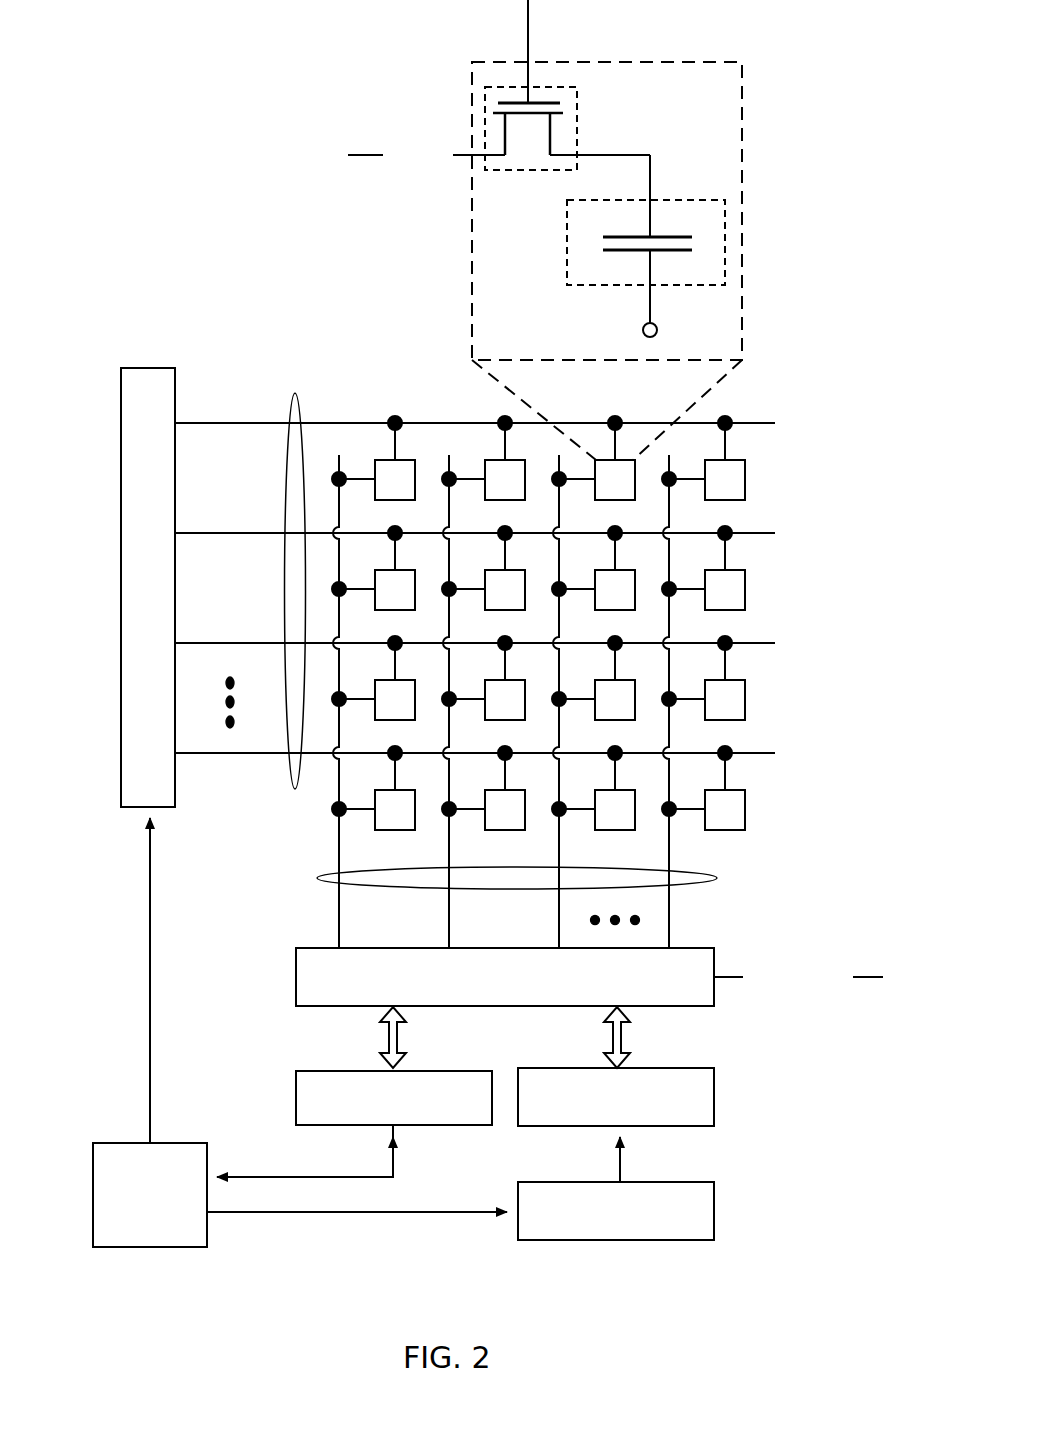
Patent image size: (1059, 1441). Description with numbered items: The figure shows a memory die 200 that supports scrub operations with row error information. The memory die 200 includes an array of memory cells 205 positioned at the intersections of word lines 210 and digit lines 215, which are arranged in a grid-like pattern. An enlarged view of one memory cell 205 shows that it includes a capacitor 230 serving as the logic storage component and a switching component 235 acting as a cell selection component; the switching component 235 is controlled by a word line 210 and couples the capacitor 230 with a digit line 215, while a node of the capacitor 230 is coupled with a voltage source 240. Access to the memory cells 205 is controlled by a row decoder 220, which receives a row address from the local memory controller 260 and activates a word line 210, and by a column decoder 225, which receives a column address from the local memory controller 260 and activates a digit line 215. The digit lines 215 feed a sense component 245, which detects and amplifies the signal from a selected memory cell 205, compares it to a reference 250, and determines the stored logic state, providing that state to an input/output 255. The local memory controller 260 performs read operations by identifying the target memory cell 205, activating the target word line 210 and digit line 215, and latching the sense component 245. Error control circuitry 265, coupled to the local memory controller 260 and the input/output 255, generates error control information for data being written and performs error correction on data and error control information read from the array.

The memory die 200 is at (728, 1276).
The memory cell 205 is at (687, 62).
The word line 210 is at (528, 1).
The digit line 215 is at (348, 153).
The row decoder 220 is at (121, 725).
The column decoder 225 is at (410, 1068).
The capacitor 230 is at (567, 257).
The switching component 235 is at (577, 130).
The voltage source 240 is at (658, 330).
The sense component 245 is at (340, 1006).
The reference 250 is at (870, 977).
The input/output 255 is at (655, 1066).
The local memory controller 260 is at (143, 1247).
The error control circuitry 265 is at (618, 1240).